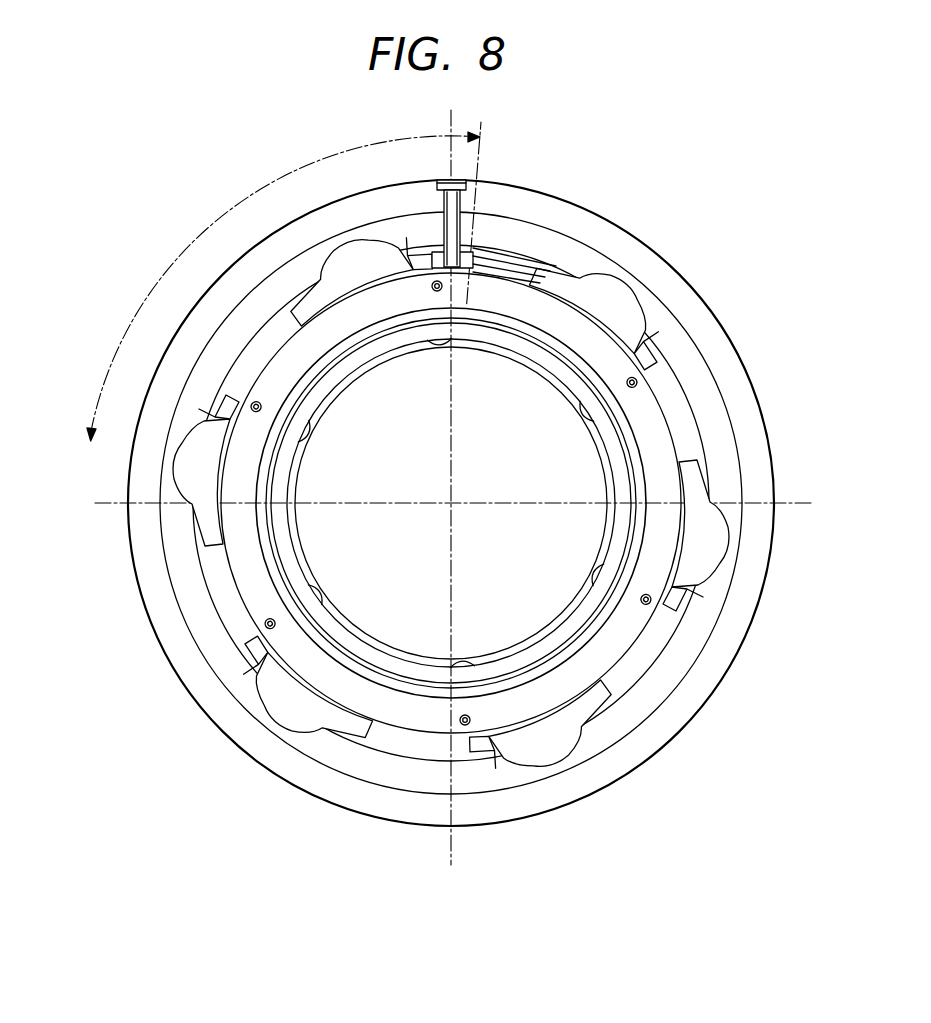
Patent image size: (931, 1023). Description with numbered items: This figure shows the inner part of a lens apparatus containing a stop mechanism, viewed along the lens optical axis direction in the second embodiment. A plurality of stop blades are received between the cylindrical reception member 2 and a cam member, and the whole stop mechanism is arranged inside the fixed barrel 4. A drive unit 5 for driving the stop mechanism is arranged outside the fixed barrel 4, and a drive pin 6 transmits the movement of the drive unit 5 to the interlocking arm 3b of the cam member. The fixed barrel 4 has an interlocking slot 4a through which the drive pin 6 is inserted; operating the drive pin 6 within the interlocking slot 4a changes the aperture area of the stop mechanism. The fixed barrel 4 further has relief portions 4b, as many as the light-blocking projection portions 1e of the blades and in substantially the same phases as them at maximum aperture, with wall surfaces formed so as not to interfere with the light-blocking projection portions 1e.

The light-blocking projection portion 1e is at (340, 262).
The cylindrical reception member 2 is at (660, 395).
The interlocking arm 3b is at (520, 256).
The fixed barrel 4 is at (560, 245).
The interlocking slot 4a is at (172, 262).
The relief portion 4b is at (417, 262).
The drive unit 5 is at (150, 585).
The drive pin 6 is at (455, 222).